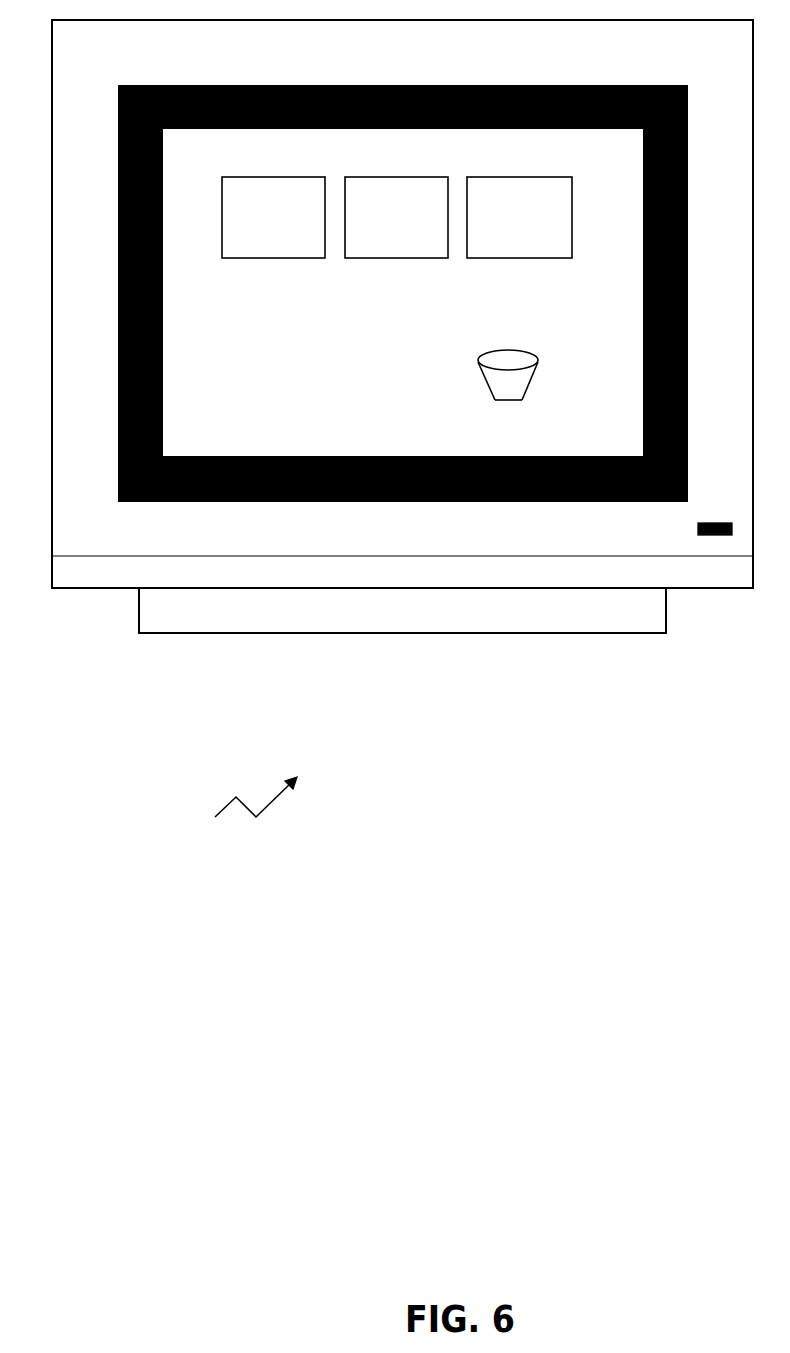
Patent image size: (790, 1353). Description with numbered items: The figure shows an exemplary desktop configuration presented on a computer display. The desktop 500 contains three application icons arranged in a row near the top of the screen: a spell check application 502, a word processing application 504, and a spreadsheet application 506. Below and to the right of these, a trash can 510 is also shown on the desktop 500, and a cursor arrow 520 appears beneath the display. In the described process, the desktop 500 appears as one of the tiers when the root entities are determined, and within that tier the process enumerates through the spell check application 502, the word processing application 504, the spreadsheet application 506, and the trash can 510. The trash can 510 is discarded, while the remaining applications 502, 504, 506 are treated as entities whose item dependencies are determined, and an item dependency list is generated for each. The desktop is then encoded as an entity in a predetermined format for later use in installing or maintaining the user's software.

The desktop 500 is at (282, 392).
The spell check application 502 is at (252, 258).
The word processing application 504 is at (385, 258).
The spreadsheet application 506 is at (508, 258).
The trash can 510 is at (510, 400).
The cursor arrow 520 is at (231, 812).